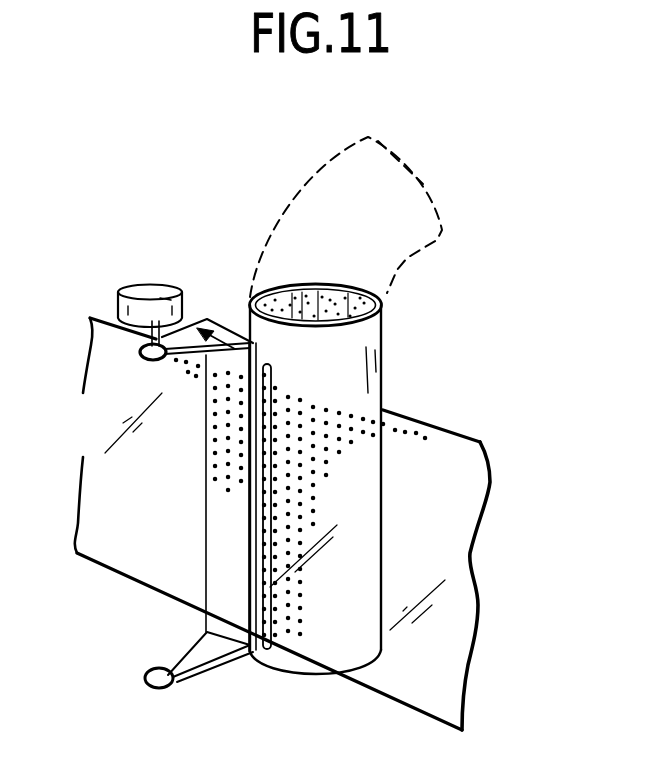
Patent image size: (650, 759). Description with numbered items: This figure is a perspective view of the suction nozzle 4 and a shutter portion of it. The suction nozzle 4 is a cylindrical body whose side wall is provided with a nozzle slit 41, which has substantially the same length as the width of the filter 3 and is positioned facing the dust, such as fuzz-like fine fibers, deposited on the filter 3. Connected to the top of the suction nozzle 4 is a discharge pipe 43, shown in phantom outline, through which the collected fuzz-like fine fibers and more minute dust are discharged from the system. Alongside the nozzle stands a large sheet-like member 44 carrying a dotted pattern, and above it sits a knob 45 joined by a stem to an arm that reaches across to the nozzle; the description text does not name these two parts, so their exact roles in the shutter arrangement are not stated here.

The filter 3 is at (303, 445).
The suction nozzle 4 is at (375, 358).
The nozzle slit 41 is at (267, 550).
The discharge pipe 43 is at (394, 261).
The sheet 44 is at (228, 551).
The knob 45 is at (159, 292).